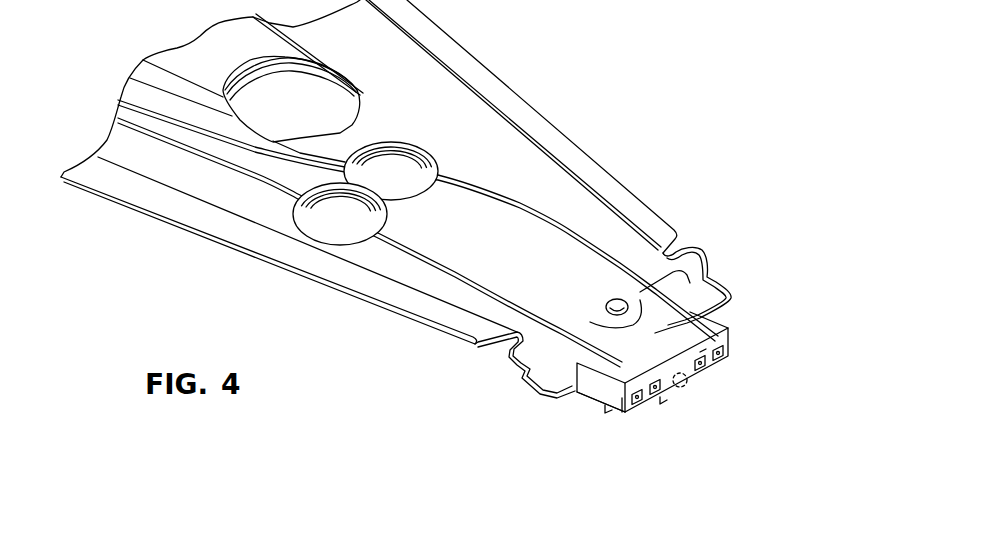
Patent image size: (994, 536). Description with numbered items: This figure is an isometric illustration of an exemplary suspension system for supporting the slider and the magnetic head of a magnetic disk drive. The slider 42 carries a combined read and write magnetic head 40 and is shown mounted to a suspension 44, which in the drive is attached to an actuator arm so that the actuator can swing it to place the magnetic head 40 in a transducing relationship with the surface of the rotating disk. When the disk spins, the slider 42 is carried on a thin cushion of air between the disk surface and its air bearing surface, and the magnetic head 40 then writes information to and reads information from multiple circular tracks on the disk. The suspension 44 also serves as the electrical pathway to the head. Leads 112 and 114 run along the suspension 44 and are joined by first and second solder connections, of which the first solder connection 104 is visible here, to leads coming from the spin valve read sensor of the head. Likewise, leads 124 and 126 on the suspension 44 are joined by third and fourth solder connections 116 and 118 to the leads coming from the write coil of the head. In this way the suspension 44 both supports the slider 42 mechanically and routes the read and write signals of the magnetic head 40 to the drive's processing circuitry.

The magnetic head 40 is at (690, 388).
The slider 42 is at (576, 397).
The suspension 44 is at (396, 199).
The first solder connection 104 is at (622, 405).
The lead 112 is at (409, 262).
The lead 114 is at (593, 241).
The third solder connection 116 is at (724, 347).
The fourth solder connection 118 is at (703, 363).
The lead 124 is at (455, 272).
The lead 126 is at (513, 206).